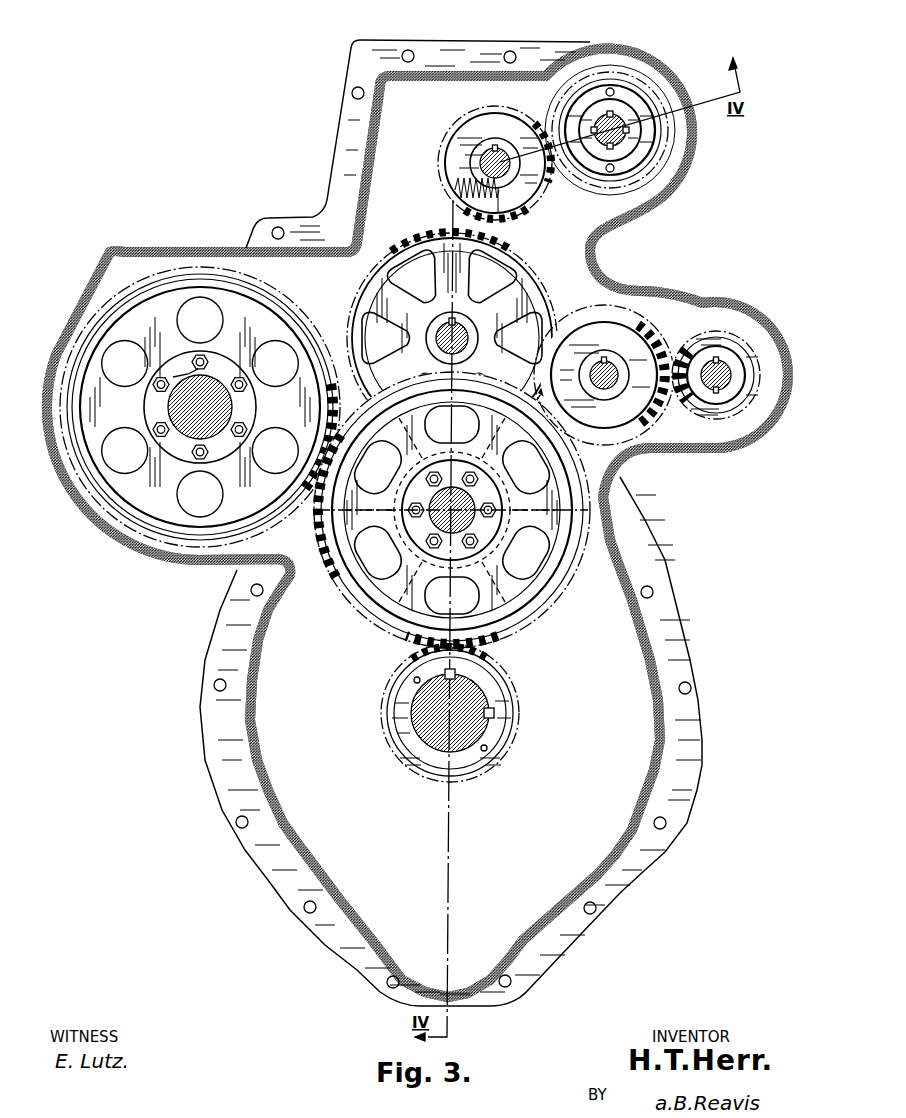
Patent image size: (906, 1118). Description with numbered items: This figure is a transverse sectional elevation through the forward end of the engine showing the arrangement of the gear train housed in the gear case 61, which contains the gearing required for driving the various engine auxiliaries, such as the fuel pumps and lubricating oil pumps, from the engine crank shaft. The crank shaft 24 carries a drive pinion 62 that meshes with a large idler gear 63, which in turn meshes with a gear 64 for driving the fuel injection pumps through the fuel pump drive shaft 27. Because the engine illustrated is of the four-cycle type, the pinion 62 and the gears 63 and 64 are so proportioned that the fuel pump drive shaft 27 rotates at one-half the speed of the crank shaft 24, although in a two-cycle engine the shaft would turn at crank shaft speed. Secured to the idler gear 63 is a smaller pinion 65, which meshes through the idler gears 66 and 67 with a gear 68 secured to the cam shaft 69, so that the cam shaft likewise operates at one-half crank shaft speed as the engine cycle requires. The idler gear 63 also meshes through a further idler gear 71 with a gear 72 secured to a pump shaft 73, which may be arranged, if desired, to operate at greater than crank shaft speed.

The crank shaft 24 is at (413, 717).
The fuel pump drive shaft 27 is at (172, 380).
The gear case 61 is at (252, 775).
The drive pinion 62 is at (522, 720).
The idler gear 63 is at (557, 607).
The gear 64 is at (110, 500).
The pinion 65 is at (422, 532).
The idler gear 66 is at (542, 262).
The idler gear 67 is at (438, 180).
The gear 68 is at (657, 152).
The cam shaft 69 is at (612, 128).
The idler gear 71 is at (650, 452).
The gear 72 is at (747, 417).
The pump shaft 73 is at (717, 372).